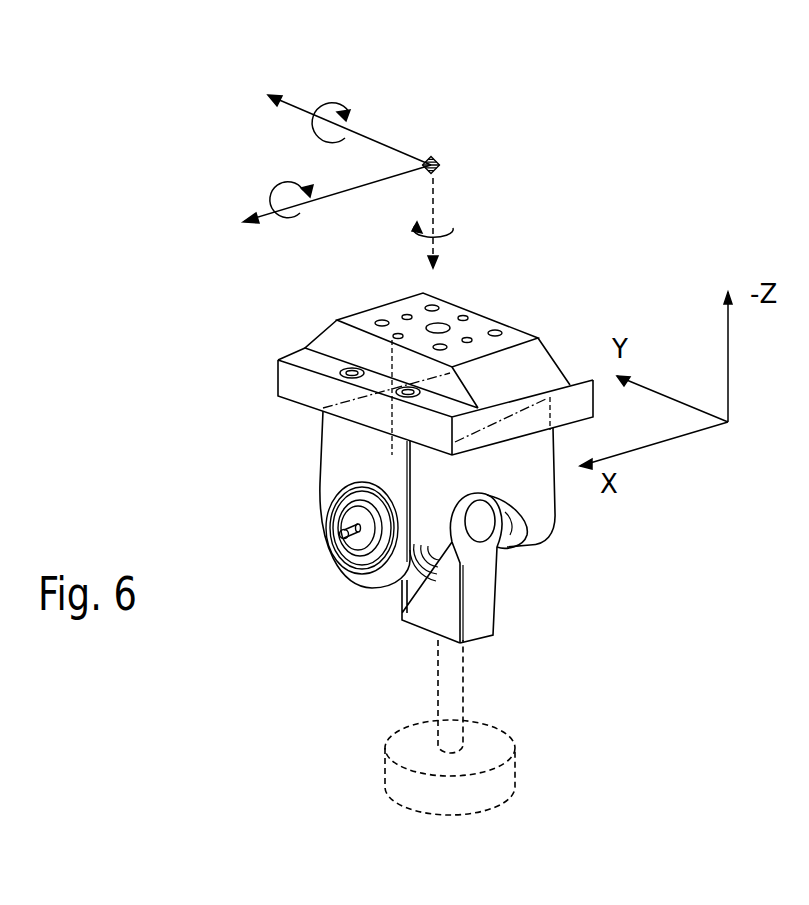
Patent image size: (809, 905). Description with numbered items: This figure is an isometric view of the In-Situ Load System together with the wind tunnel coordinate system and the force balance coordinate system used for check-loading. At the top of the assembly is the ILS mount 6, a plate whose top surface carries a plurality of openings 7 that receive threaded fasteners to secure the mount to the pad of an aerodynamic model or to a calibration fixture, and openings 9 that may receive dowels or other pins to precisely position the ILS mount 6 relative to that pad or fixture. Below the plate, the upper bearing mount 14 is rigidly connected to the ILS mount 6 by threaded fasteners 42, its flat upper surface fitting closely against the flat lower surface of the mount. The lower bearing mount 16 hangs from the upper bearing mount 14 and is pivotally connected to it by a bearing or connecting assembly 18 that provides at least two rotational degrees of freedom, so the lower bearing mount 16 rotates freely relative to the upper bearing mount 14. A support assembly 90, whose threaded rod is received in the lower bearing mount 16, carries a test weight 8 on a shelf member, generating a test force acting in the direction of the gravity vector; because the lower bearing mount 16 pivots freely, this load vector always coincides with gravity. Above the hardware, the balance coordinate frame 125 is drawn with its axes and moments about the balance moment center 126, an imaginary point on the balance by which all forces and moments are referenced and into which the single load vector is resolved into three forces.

The balance coordinate frame 125 is at (422, 95).
The BMC 126 is at (441, 167).
The ILS mount 6 is at (323, 390).
The openings 7 is at (377, 322).
The openings 9 is at (403, 315).
The threaded fasteners 42 is at (346, 367).
The upper bearing mount 14 is at (320, 452).
The lower bearing mount 16 is at (500, 606).
The bearing or connecting assembly 18 is at (404, 618).
The support assembly 90 is at (462, 690).
The test weight 8 is at (500, 767).